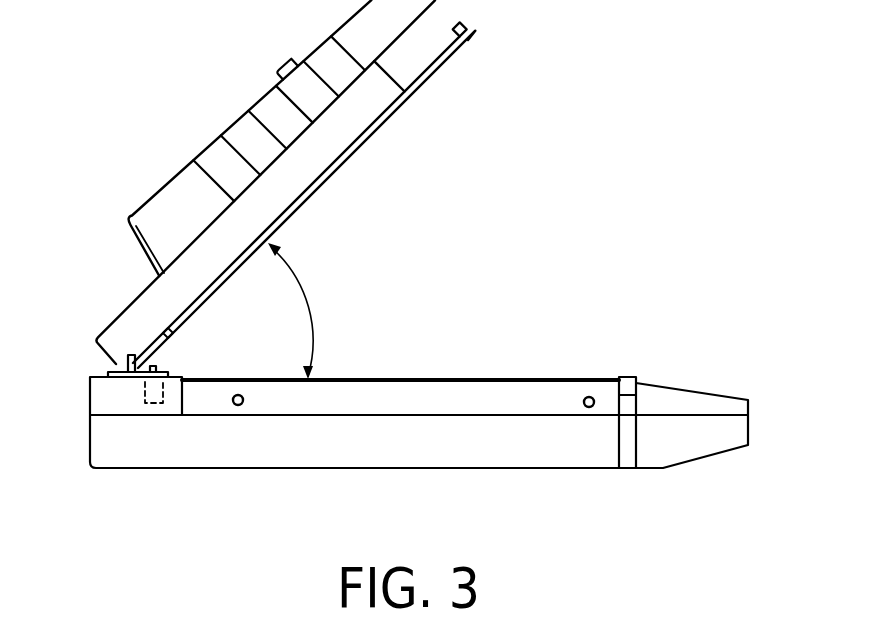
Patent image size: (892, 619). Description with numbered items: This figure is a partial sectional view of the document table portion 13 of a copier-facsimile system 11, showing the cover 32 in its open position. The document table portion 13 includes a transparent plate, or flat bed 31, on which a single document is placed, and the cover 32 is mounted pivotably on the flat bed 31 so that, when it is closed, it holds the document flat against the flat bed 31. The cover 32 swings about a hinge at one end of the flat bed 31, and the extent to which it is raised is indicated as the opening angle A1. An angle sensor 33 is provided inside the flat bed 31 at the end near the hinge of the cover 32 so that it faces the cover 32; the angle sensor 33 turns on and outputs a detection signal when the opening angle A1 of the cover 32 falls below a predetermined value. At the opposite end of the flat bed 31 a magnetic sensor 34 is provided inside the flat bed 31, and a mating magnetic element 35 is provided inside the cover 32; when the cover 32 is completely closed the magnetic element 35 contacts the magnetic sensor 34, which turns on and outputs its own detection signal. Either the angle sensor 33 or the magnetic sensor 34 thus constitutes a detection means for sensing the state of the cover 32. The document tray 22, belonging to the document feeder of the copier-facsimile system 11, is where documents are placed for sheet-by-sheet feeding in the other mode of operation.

The copier-facsimile system 11 is at (479, 456).
The document table portion 13 is at (316, 184).
The document tray 22 is at (188, 173).
The transparent plate (flat bed) 31 is at (463, 379).
The cover 32 is at (388, 129).
The angle sensor 33 is at (160, 363).
The magnetic sensor 34 is at (627, 379).
The magnetic element 35 is at (470, 38).
The opening angle A1 is at (307, 313).